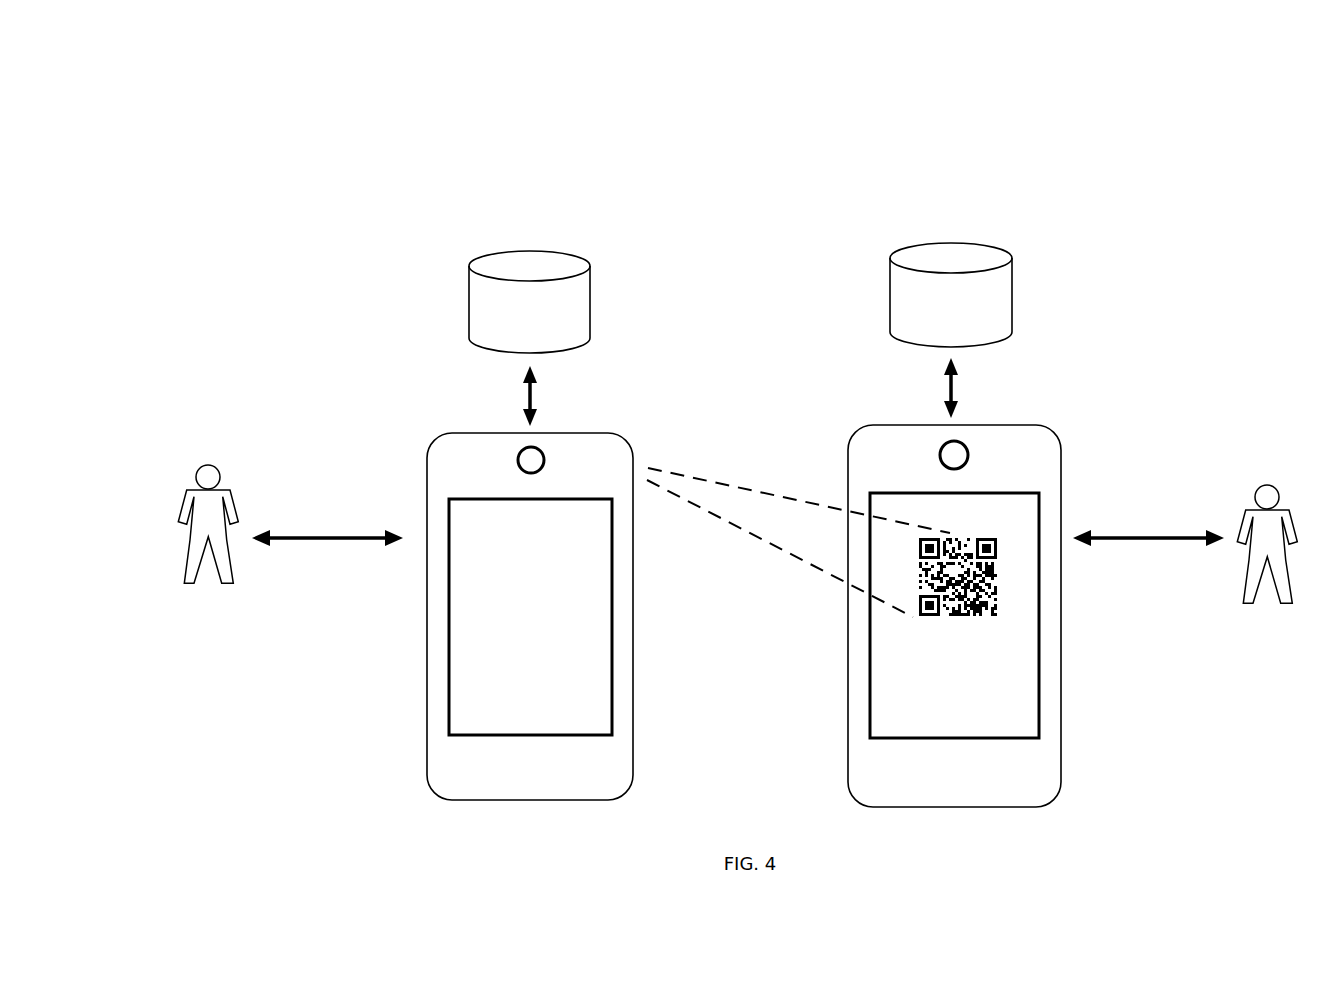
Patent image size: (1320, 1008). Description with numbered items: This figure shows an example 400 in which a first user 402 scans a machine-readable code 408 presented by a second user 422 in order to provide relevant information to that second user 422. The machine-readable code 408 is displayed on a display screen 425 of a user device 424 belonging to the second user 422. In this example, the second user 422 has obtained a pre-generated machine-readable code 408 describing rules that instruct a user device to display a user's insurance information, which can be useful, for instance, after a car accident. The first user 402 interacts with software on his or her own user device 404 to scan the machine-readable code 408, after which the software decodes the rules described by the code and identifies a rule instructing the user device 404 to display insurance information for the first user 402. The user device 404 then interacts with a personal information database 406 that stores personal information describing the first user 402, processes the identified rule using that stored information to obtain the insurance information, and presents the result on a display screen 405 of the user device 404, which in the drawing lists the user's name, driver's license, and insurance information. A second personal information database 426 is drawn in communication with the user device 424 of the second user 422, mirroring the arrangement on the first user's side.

The example 400 is at (175, 96).
The first user 402 is at (177, 489).
The user device 404 is at (638, 470).
The display screen 405 is at (620, 597).
The personal information database 406 is at (489, 252).
The machine-readable code 408 is at (998, 527).
The second user 422 is at (1236, 509).
The user device 424 is at (1068, 460).
The display screen 425 is at (1043, 605).
The personal information database 426 is at (908, 243).